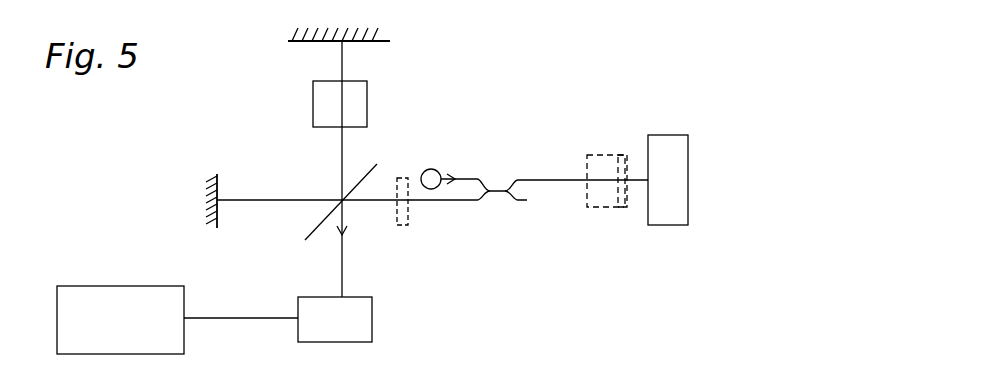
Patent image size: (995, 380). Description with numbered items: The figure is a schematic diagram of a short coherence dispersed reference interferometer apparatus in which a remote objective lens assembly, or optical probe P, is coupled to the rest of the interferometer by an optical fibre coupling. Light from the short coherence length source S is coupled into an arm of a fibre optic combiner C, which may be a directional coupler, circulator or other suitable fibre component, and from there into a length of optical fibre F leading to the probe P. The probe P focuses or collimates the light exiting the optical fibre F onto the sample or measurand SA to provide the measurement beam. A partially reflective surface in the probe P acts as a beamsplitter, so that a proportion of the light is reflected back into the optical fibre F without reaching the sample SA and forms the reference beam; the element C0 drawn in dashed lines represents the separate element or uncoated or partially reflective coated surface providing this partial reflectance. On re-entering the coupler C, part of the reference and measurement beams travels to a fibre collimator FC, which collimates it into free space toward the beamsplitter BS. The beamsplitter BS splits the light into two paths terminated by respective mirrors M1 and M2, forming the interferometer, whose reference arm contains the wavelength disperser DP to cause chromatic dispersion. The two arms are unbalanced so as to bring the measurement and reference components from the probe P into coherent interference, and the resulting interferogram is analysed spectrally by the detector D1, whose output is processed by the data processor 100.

The data processor 100 is at (113, 286).
The first mirror M1 is at (212, 188).
The second mirror M2 is at (358, 40).
The wavelength disperser DP is at (358, 104).
The beamsplitter BS is at (320, 211).
The fibre collimator FC is at (401, 217).
The short coherence length source S is at (449, 179).
The fibre optic combiner C is at (562, 179).
The optical fibre F is at (595, 179).
The optical probe P is at (620, 198).
The separate element or uncoated/partial reflective coated surface C0 is at (620, 155).
The sample or measurand SA is at (667, 225).
The detector D1 is at (335, 319).